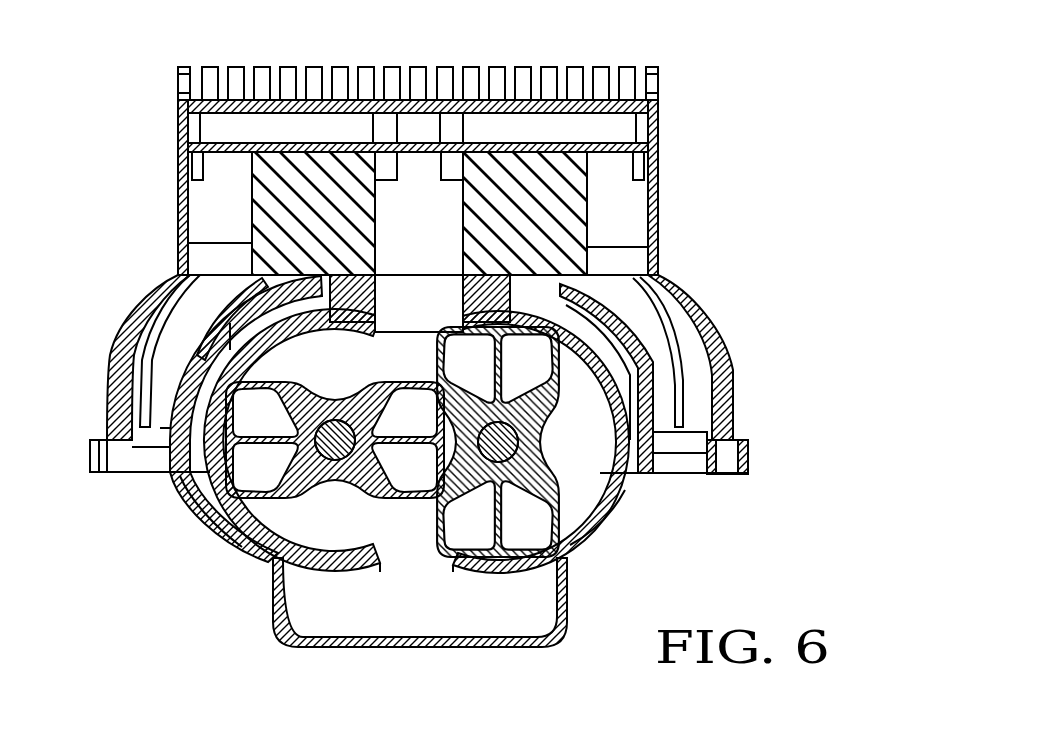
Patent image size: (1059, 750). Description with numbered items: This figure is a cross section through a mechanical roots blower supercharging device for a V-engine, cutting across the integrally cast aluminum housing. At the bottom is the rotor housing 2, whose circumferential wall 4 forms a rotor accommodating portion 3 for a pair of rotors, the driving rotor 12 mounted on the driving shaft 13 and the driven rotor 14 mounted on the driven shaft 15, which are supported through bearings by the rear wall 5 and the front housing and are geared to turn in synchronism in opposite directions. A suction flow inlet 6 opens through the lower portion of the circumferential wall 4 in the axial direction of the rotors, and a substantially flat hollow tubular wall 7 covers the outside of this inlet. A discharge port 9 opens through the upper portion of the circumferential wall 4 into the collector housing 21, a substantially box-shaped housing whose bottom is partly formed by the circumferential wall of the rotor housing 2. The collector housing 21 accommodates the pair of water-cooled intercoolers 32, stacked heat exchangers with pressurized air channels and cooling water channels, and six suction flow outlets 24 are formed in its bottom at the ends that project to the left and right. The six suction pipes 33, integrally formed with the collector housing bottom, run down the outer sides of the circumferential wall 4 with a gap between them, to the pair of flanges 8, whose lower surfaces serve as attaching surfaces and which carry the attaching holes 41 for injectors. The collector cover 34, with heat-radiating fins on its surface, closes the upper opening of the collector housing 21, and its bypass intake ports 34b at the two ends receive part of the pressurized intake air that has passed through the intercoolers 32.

The rotor housing 2 is at (233, 538).
The rotor accommodating portion 3 is at (630, 503).
The circumferential wall 4 is at (598, 537).
The rear wall 5 is at (393, 530).
The suction flow inlet 6 is at (376, 555).
The hollow tubular wall 7 is at (562, 633).
The flanges 8 is at (90, 460).
The discharge port 9 is at (383, 310).
The driving rotor 12 is at (347, 486).
The driving shaft 13 is at (331, 470).
The driven rotor 14 is at (540, 448).
The driven shaft 15 is at (518, 424).
The collector housing 21 is at (660, 167).
The suction flow outlets 24 is at (202, 248).
The intercoolers 32 is at (293, 207).
The suction pipes 33 is at (120, 336).
The collector cover 34 is at (655, 80).
The bypass intake ports 34b is at (237, 146).
The attaching holes 41 is at (724, 476).